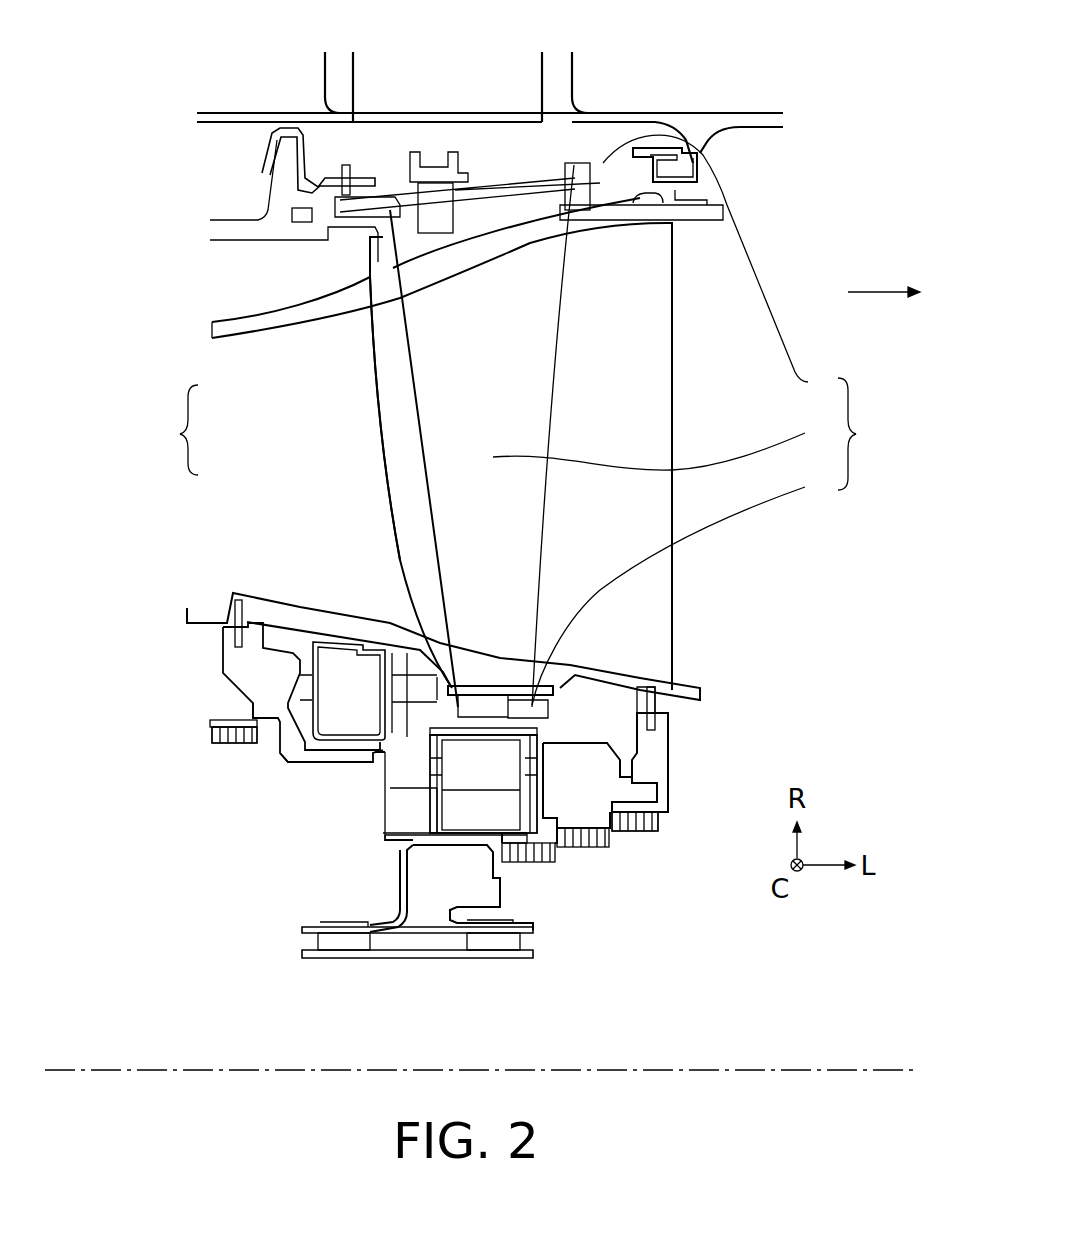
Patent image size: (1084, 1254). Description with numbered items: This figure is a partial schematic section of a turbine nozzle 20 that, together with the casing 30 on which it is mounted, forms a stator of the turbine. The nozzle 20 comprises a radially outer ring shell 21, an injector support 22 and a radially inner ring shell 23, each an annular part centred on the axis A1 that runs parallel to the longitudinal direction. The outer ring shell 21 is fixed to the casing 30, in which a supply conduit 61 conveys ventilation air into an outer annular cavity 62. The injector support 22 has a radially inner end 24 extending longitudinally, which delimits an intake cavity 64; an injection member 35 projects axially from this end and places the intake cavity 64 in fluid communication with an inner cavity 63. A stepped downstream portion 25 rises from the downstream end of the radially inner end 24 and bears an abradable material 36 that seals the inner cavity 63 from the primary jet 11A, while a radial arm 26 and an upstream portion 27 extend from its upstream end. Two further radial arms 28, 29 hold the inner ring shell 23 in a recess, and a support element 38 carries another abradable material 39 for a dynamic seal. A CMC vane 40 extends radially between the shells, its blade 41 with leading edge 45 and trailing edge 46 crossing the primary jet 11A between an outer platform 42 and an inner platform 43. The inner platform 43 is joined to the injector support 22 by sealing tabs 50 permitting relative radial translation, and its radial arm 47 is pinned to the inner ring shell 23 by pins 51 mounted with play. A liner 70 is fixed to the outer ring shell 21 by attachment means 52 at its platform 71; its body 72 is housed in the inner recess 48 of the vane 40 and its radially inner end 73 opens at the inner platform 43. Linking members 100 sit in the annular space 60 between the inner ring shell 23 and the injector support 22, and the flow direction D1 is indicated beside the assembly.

The supply conduit 61 is at (353, 72).
The casing 30 is at (697, 127).
The outer annular cavity 62 is at (305, 195).
The attachment means 52 is at (457, 170).
The radially outer end (platform) 71 is at (721, 268).
The radially outer ring shell 21 is at (627, 188).
The outer platform 42 is at (275, 327).
The primary jet 11A is at (158, 346).
The blade 41 is at (383, 450).
The leading edge 45 is at (388, 497).
The trailing edge 46 is at (673, 438).
The inner recess 48 is at (545, 538).
The body 72 is at (666, 443).
The radially inner end 73 is at (685, 582).
The liner 70 is at (866, 434).
The vane 40 is at (170, 430).
The inner platform 43 is at (310, 605).
The sealing tabs 50 is at (223, 597).
The radial arm 28 is at (230, 653).
The support element 38 is at (220, 720).
The abradable material 39 is at (240, 743).
The nozzle 20 is at (143, 760).
The upstream portion 27 is at (285, 760).
The pins 51 is at (393, 690).
The radial arm 47 is at (377, 770).
The linking members 100 is at (495, 815).
The annular space 60 is at (585, 778).
The radially inner end 24 is at (443, 842).
The radial arm 26 is at (377, 820).
The downstream portion 25 is at (583, 828).
The injector support 22 is at (677, 800).
The abradable material 36 is at (647, 832).
The radial arm 29 is at (667, 747).
The radially inner ring shell 23 is at (613, 715).
The intake cavity 64 is at (451, 888).
The injection member 35 is at (417, 958).
The inner cavity 63 is at (417, 980).
The axis A1 is at (92, 1068).
The flow direction D1 is at (880, 292).